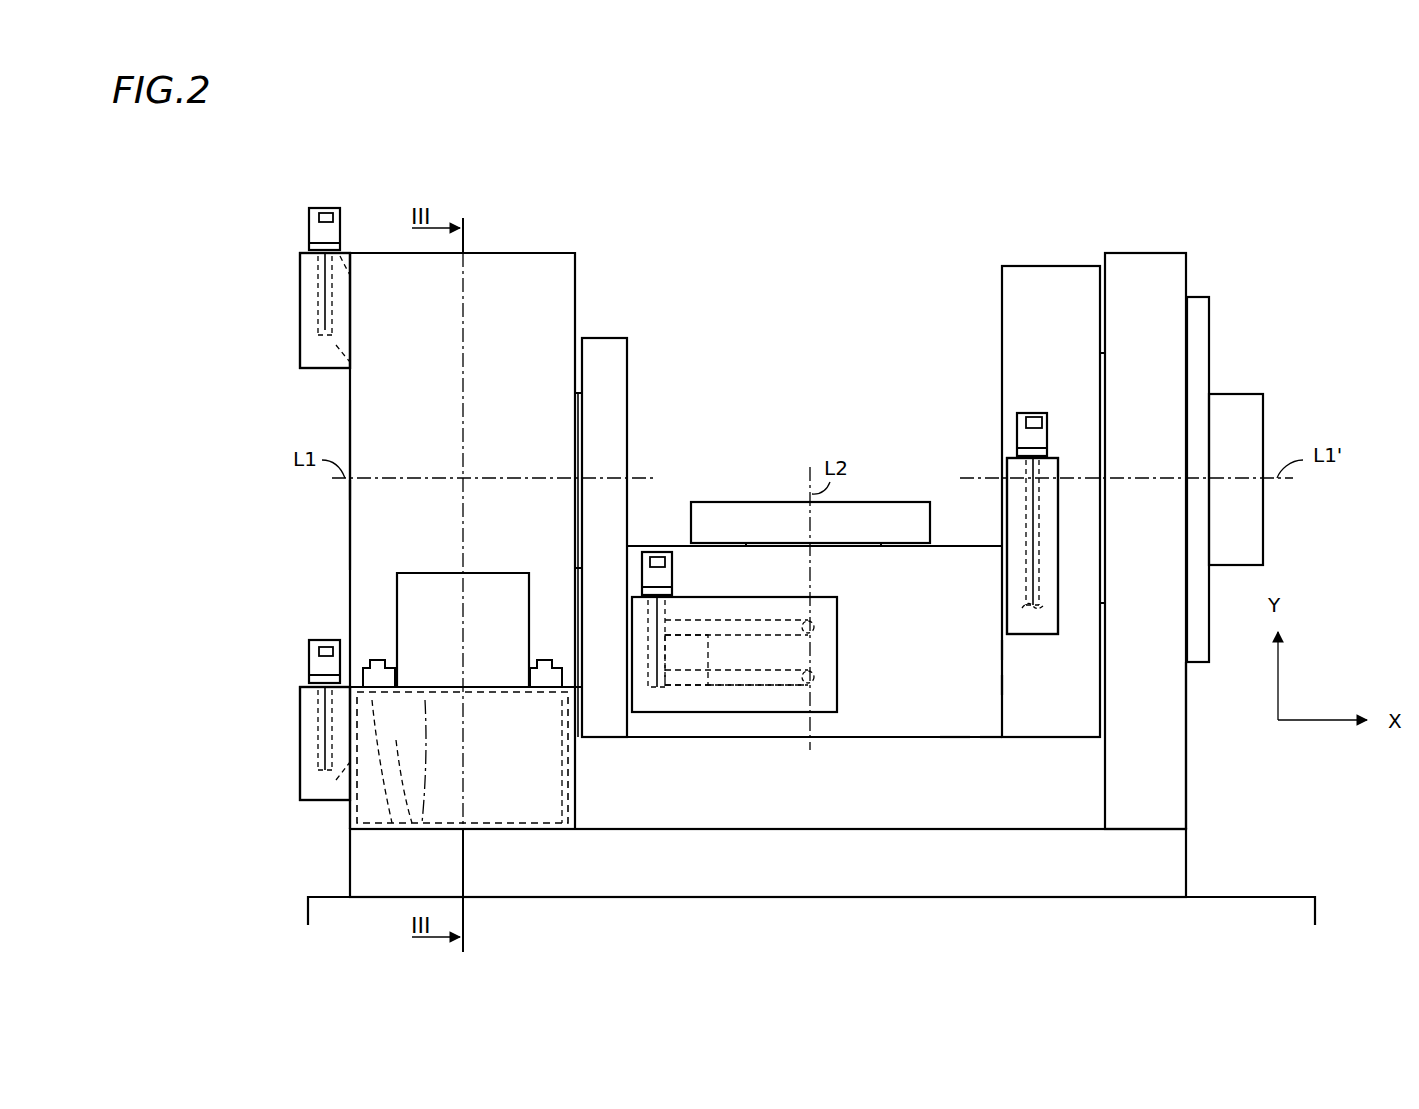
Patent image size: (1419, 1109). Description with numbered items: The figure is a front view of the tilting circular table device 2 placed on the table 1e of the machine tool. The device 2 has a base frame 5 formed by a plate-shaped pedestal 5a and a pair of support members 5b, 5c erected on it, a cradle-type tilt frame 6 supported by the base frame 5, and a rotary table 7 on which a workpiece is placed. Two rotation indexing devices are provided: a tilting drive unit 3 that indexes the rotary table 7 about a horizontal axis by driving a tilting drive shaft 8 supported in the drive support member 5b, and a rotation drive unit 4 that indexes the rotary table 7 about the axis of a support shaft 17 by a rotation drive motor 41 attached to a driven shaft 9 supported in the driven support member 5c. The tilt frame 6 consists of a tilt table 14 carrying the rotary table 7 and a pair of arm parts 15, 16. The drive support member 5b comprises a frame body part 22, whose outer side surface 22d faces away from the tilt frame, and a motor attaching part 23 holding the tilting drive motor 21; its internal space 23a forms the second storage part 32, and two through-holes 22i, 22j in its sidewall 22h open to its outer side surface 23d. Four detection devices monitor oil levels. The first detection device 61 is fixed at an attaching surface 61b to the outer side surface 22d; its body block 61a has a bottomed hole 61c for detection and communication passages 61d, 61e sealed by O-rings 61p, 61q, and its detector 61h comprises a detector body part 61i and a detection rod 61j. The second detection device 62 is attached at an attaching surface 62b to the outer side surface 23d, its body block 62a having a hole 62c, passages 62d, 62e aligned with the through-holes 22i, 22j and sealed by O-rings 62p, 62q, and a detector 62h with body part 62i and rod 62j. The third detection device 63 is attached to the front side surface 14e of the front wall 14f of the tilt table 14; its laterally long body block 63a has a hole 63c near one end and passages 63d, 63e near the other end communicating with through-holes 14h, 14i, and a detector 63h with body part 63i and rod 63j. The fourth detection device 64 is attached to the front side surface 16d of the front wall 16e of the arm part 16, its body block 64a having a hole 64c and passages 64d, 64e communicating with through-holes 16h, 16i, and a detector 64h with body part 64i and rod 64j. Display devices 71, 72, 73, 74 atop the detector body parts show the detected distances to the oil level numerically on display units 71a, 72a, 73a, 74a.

The table 1e is at (308, 908).
The tilting circular table device 2 is at (497, 170).
The tilting drive unit 3 is at (490, 230).
The rotation drive unit 4 is at (1226, 241).
The base frame 5 is at (335, 444).
The pedestal 5a is at (350, 866).
The drive support member 5b is at (347, 507).
The driven support member 5c is at (1187, 694).
The tilt frame 6 is at (970, 262).
The rotary table 7 is at (792, 502).
The tilting drive shaft 8 is at (582, 425).
The driven shaft 9 is at (1212, 305).
The tilt table 14 is at (927, 738).
The front side surface 14e is at (982, 718).
The front wall 14f is at (950, 720).
The upper through-hole 14h is at (820, 632).
The lower through-hole 14i is at (818, 682).
The arm part 15 is at (606, 338).
The arm part 16 is at (1028, 266).
The front side surface 16d is at (1043, 646).
The front wall 16e is at (1043, 680).
The upper through-hole 16h is at (1062, 472).
The lower through-hole 16i is at (1055, 603).
The support shaft 17 is at (885, 543).
The tilting drive motor 21 is at (396, 598).
The frame body part 22 is at (545, 253).
The outer side surface 22d is at (348, 540).
The sidewall 22h is at (372, 700).
The upper through-hole 22i is at (408, 740).
The lower through-hole 22j is at (420, 830).
The motor attaching part 23 is at (548, 830).
The internal space 23a is at (502, 818).
The outer side surface 23d is at (350, 828).
The second storage part 32 is at (567, 832).
The rotation drive motor 41 is at (1212, 393).
The first detection device 61 is at (212, 198).
The body block 61a is at (300, 258).
The attaching surface 61b is at (351, 265).
The hole for detection 61c is at (325, 330).
The first detector-side communication passage 61d is at (340, 340).
The second detector-side communication passage 61e is at (338, 360).
The detector 61h is at (323, 243).
The detector body part 61i is at (318, 262).
The detection rod 61j is at (318, 300).
The O-ring 61p is at (350, 275).
The O-ring 61q is at (347, 385).
The second detection device 62 is at (212, 630).
The body block 62a is at (302, 687).
The attaching surface 62b is at (368, 680).
The hole for detection 62c is at (325, 740).
The first detector-side communication passage 62d is at (325, 705).
The second detector-side communication passage 62e is at (336, 770).
The detector 62h is at (323, 675).
The detector body part 62i is at (310, 690).
The holder bottom 62j is at (330, 760).
The O-ring 62p is at (388, 658).
The O-ring 62q is at (350, 790).
The third detection device 63 is at (775, 452).
The body block 63a is at (745, 600).
The hole for detection 63c is at (642, 690).
The first detector-side communication passage 63d is at (715, 690).
The second detector-side communication passage 63e is at (762, 690).
The detector 63h is at (672, 580).
The detector body part 63i is at (640, 604).
The block cavity 63j is at (680, 690).
The fourth detection device 64 is at (970, 390).
The body block 64a is at (1015, 460).
The hole for detection 64c is at (1010, 525).
The first detector-side communication passage 64d is at (1028, 482).
The second detector-side communication passage 64e is at (1022, 602).
The detector 64h is at (1028, 447).
The detector body part 64i is at (1018, 468).
The holder bottom 64j is at (1028, 575).
The display device 71 is at (302, 210).
The display unit 71a is at (325, 212).
The display device 72 is at (304, 637).
The display unit 72a is at (323, 645).
The display device 73 is at (669, 545).
The display unit 73a is at (655, 557).
The display device 74 is at (1033, 407).
The display unit 74a is at (1027, 418).